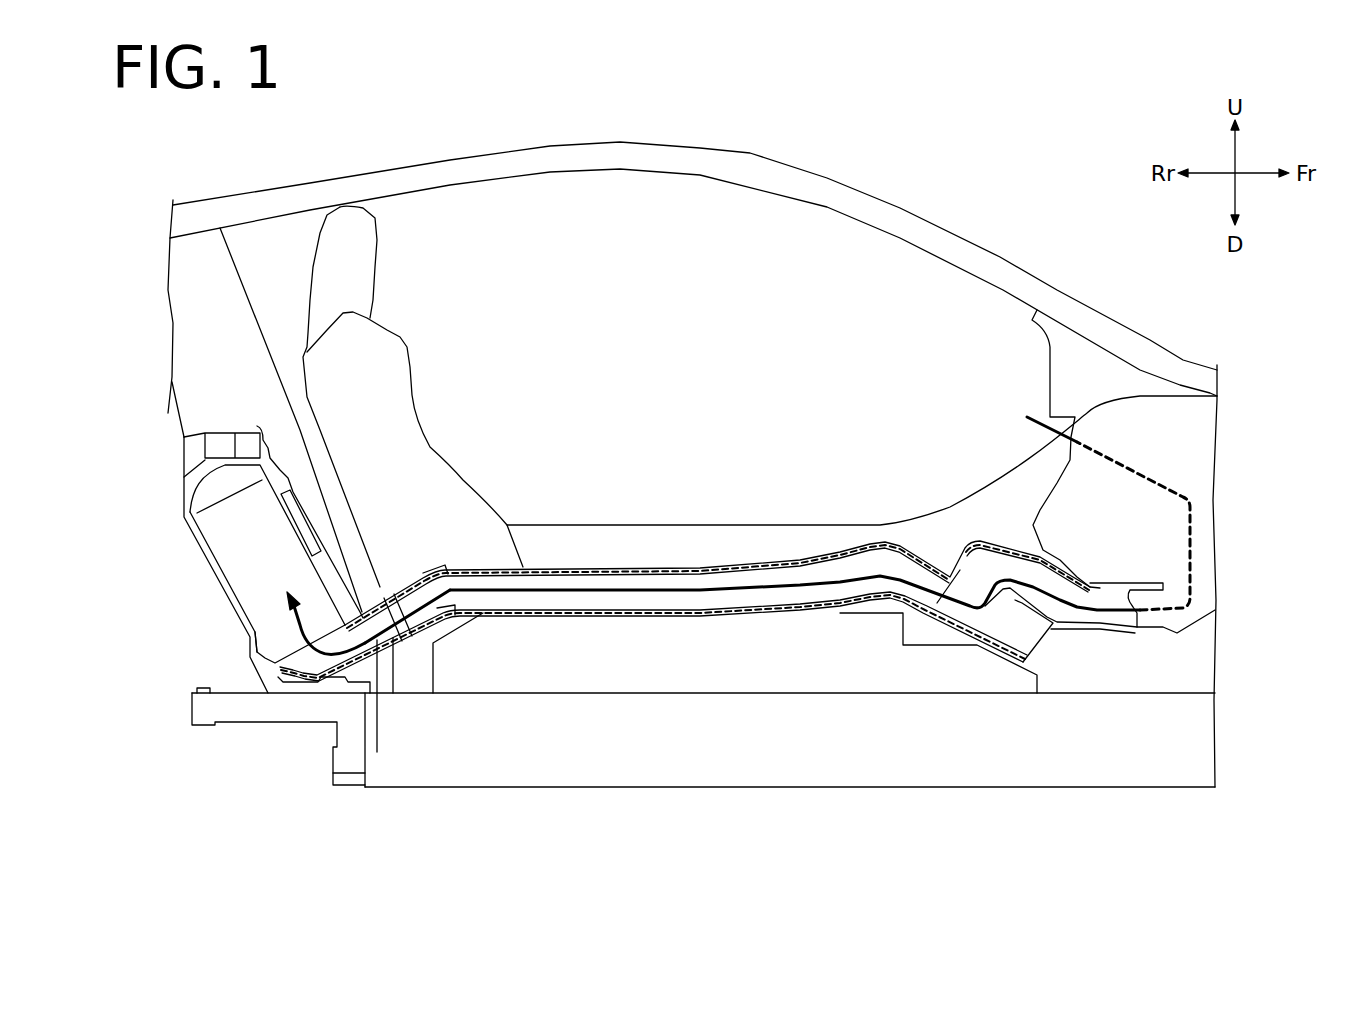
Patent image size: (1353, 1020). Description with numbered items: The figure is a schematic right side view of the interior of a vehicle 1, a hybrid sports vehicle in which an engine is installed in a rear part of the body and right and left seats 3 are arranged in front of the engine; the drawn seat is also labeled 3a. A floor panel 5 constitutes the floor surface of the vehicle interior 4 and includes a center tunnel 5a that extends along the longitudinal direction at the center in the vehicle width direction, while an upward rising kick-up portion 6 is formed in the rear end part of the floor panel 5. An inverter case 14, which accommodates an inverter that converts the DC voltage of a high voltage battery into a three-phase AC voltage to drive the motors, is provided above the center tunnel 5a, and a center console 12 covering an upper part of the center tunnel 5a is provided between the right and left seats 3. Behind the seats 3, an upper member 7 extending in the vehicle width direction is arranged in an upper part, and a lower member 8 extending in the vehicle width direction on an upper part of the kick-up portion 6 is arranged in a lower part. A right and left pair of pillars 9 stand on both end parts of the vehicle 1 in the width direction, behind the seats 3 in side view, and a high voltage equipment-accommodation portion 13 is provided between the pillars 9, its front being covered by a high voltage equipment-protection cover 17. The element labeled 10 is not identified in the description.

The vehicle 1 is at (992, 208).
The seat 3 is at (416, 396).
The front seat 3a is at (387, 375).
The vehicle interior 4 is at (808, 270).
The floor panel 5 is at (680, 770).
The center tunnel 5a is at (603, 727).
The kick-up portion 6 is at (367, 762).
The upper member 7 is at (186, 448).
The lower member 8 is at (256, 675).
The pillar 9 is at (207, 282).
The battery 10 is at (243, 537).
The center console 12 is at (617, 525).
The high voltage equipment-accommodation portion 13 is at (212, 575).
The inverter case 14 is at (712, 648).
The high voltage equipment-protection cover 17 is at (377, 723).